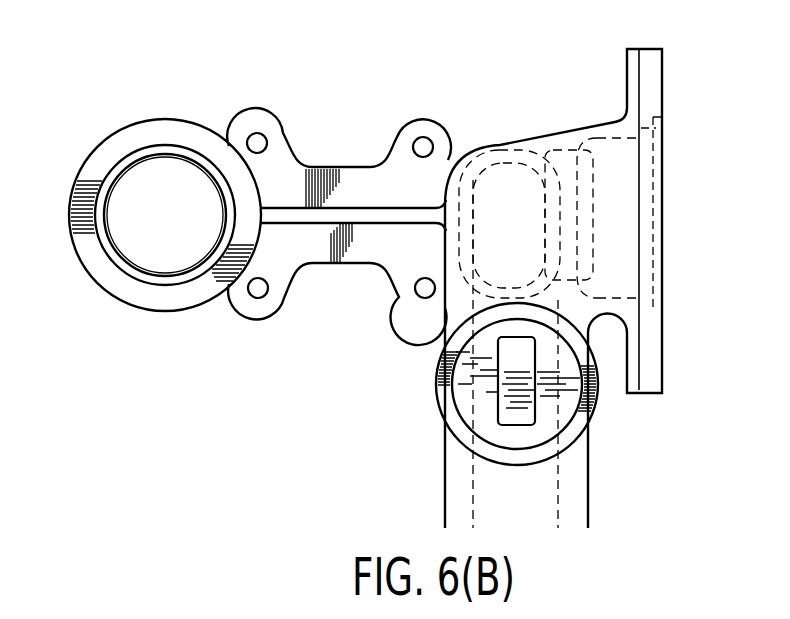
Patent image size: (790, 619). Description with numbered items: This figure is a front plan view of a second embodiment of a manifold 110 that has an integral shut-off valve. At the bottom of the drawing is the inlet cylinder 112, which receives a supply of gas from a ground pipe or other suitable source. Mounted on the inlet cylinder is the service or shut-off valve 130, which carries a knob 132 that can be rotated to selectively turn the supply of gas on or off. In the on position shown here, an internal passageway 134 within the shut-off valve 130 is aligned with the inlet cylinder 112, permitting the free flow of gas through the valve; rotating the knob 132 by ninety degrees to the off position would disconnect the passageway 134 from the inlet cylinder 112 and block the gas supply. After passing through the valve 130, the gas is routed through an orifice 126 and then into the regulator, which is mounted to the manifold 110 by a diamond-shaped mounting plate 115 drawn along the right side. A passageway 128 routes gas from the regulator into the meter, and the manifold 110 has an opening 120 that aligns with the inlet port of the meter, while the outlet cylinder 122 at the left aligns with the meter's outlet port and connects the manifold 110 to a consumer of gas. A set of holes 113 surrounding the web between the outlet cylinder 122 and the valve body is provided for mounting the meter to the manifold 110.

The manifold 110 is at (112, 325).
The inlet cylinder 112 is at (548, 490).
The set of holes 113 is at (417, 140).
The diamond-shaped mounting plate 115 is at (653, 70).
The opening 120 is at (502, 172).
The outlet cylinder 122 is at (180, 180).
The orifice 126 is at (560, 213).
The passageway 128 is at (583, 153).
The shut-off valve 130 is at (460, 404).
The knob 132 is at (528, 402).
The internal passageway 134 is at (600, 373).